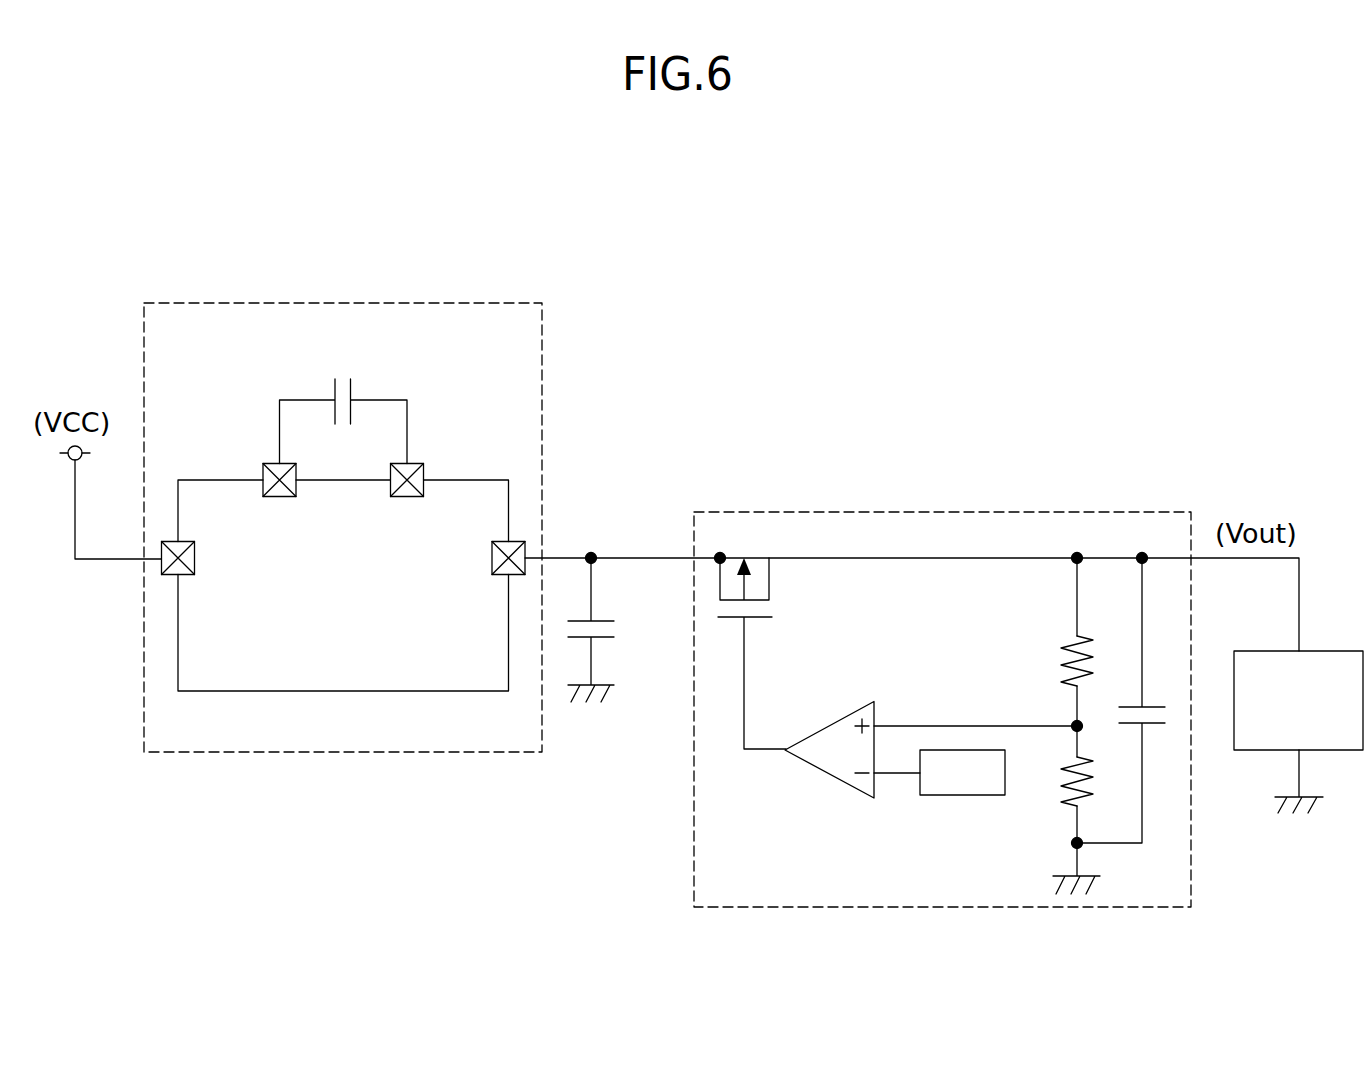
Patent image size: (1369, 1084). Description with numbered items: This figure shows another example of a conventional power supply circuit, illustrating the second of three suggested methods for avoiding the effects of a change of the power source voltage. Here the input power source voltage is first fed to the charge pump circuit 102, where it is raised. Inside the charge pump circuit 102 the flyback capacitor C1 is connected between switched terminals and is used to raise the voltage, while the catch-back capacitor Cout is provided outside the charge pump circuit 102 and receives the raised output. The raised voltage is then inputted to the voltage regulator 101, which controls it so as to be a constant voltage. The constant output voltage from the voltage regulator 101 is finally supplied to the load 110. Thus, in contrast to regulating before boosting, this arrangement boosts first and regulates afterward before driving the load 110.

The voltage regulator 101 is at (1094, 509).
The charge pump circuit 102 is at (446, 301).
The load 110 is at (1335, 651).
The flyback capacitor C1 is at (344, 405).
The catch-back capacitor Cout is at (616, 630).